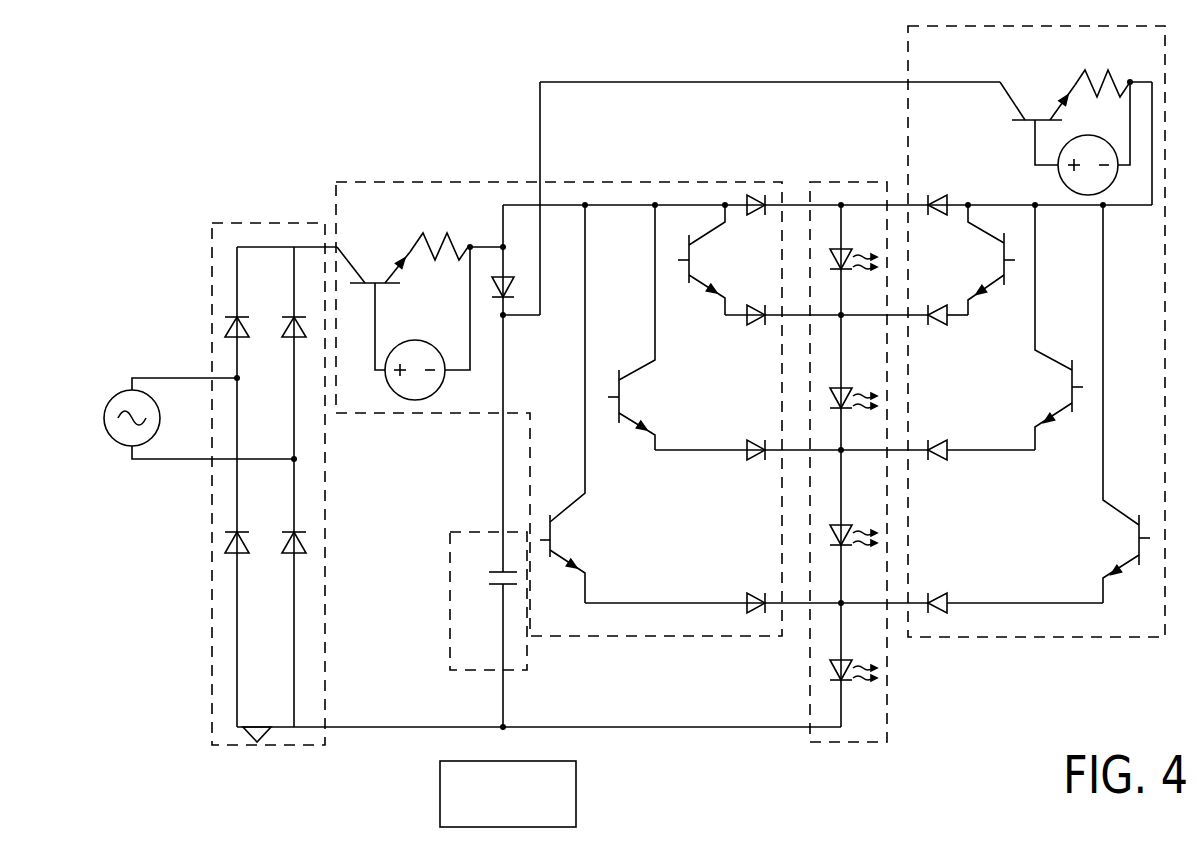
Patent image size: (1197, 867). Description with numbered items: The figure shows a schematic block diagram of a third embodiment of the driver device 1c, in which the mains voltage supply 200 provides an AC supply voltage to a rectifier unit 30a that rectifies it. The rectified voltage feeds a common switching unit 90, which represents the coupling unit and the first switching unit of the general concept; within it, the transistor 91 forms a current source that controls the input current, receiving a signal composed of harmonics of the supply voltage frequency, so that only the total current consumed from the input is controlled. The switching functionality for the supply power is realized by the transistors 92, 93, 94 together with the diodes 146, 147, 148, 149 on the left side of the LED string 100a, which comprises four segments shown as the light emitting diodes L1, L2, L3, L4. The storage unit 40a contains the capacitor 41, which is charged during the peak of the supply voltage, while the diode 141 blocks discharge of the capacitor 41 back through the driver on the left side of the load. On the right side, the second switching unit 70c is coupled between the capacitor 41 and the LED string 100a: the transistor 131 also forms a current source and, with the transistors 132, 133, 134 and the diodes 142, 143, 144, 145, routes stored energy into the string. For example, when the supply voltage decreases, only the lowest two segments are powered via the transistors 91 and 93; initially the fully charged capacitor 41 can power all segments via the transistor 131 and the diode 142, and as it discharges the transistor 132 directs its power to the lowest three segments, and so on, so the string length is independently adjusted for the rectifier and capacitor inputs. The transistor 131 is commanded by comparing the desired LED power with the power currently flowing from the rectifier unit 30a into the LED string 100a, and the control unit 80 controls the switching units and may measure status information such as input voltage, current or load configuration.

The driver device 1c is at (298, 104).
The rectifier unit 30a is at (212, 225).
The mains voltage supply 200 is at (109, 403).
The common switching unit 90 is at (483, 181).
The transistor 91 is at (361, 261).
The diode 141 is at (512, 290).
The storage unit 40a is at (472, 531).
The capacitor 41 is at (493, 587).
The transistor 92 is at (704, 281).
The transistor 93 is at (617, 417).
The transistor 94 is at (549, 561).
The diode 146 is at (758, 196).
The diode 147 is at (750, 326).
The diode 148 is at (748, 462).
The diode 149 is at (750, 592).
The light emitting diode L1 is at (848, 251).
The light emitting diode L2 is at (848, 390).
The light emitting diode L3 is at (848, 527).
The light emitting diode L4 is at (848, 662).
The LED string 100a is at (856, 744).
The second switching unit 70c is at (1023, 640).
The transistor 131 is at (1018, 122).
The transistor 132 is at (990, 284).
The transistor 133 is at (1057, 410).
The transistor 134 is at (1122, 565).
The diode 142 is at (945, 200).
The diode 143 is at (947, 322).
The diode 144 is at (947, 444).
The diode 145 is at (947, 598).
The control unit 80 is at (577, 792).